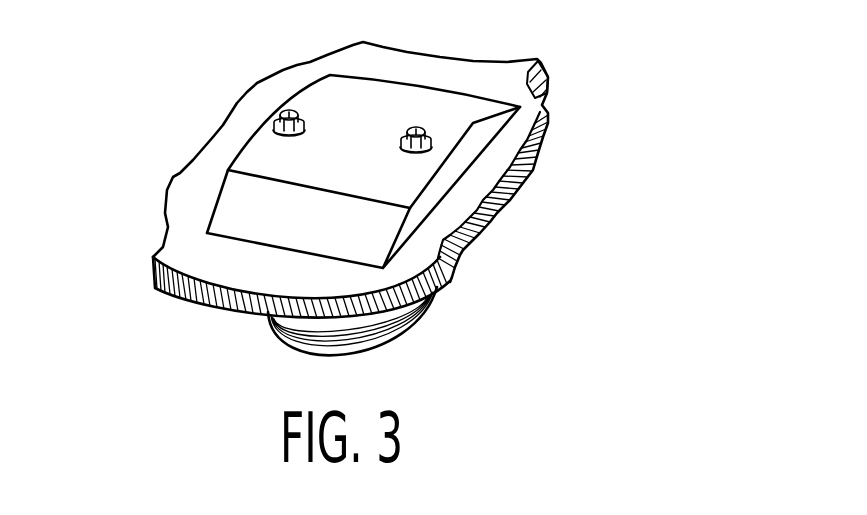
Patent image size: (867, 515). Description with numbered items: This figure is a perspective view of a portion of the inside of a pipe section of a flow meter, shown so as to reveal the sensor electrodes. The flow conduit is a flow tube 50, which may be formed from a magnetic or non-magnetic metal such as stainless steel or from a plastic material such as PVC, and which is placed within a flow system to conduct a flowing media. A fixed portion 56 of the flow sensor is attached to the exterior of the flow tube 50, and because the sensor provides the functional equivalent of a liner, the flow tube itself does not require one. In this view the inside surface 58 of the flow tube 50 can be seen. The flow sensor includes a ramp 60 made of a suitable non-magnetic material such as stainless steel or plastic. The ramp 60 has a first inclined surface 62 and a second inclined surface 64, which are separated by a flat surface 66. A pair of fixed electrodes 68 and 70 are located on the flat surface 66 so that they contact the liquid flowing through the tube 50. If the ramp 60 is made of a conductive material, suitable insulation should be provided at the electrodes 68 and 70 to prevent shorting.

The flow tube 50 is at (223, 311).
The fixed portion of flow sensor 56 is at (393, 308).
The inside surface 58 is at (311, 67).
The ramp 60 is at (187, 145).
The first inclined surface 62 is at (298, 226).
The second inclined surface 64 is at (400, 98).
The flat surface 66 is at (360, 163).
The fixed electrode 68 is at (288, 112).
The fixed electrode 70 is at (416, 129).